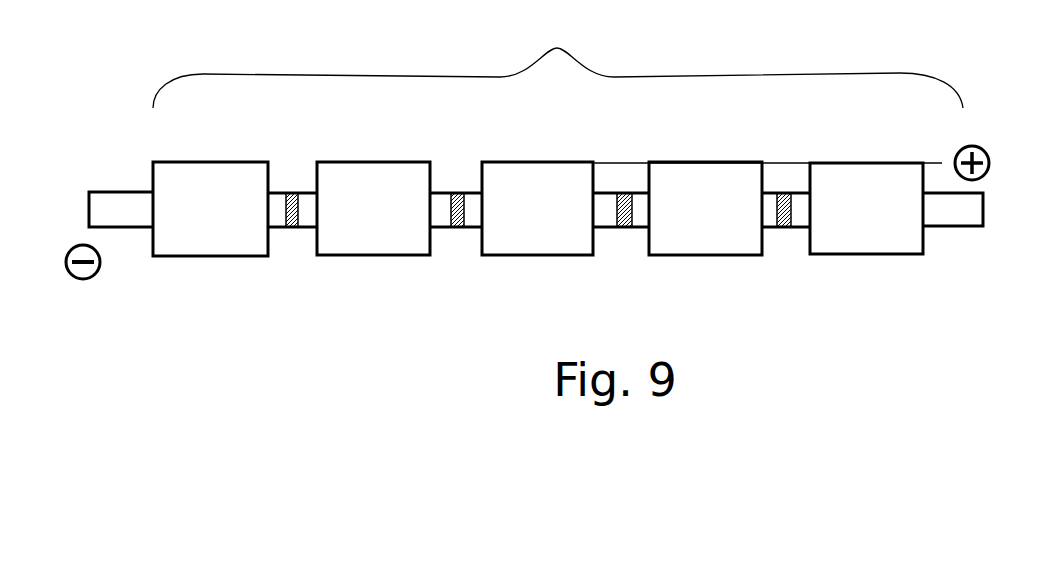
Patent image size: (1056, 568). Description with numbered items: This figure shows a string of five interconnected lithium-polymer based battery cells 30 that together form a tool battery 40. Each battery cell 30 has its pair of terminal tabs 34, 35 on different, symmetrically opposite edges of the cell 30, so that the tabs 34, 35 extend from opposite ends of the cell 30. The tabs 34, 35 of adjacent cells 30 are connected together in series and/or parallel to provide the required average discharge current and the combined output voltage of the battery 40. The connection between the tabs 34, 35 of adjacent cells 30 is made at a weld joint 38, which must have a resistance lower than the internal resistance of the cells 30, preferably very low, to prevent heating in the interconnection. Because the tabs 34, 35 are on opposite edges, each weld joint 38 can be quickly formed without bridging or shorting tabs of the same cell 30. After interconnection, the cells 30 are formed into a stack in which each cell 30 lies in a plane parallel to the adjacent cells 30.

The battery cell 30 is at (207, 192).
The tab 34 is at (105, 210).
The tab 35 is at (966, 207).
The weld joint 38 is at (295, 227).
The battery 40 is at (558, 60).